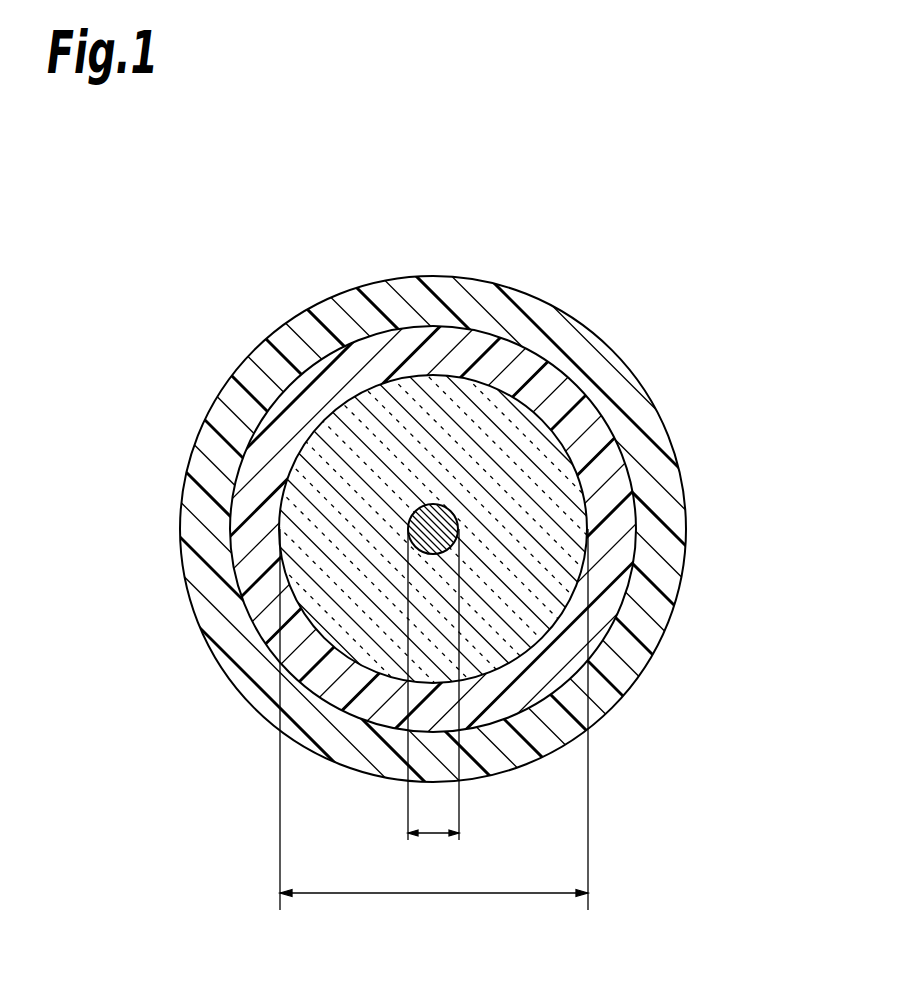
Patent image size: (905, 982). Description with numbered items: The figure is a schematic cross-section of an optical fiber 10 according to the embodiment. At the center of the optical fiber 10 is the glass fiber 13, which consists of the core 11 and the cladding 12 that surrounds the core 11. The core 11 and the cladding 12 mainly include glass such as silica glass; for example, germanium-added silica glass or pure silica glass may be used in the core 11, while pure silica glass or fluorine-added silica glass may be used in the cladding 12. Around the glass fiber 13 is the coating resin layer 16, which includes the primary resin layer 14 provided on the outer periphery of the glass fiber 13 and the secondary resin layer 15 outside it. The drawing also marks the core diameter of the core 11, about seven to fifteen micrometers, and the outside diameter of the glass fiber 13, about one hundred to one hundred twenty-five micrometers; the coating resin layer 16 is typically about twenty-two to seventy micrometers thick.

The optical fiber 10 is at (213, 210).
The core 11 is at (445, 524).
The cladding 12 is at (550, 503).
The glass fiber 13 is at (654, 271).
The primary resin layer 14 is at (627, 548).
The secondary resin layer 15 is at (663, 612).
The coating resin layer 16 is at (782, 547).